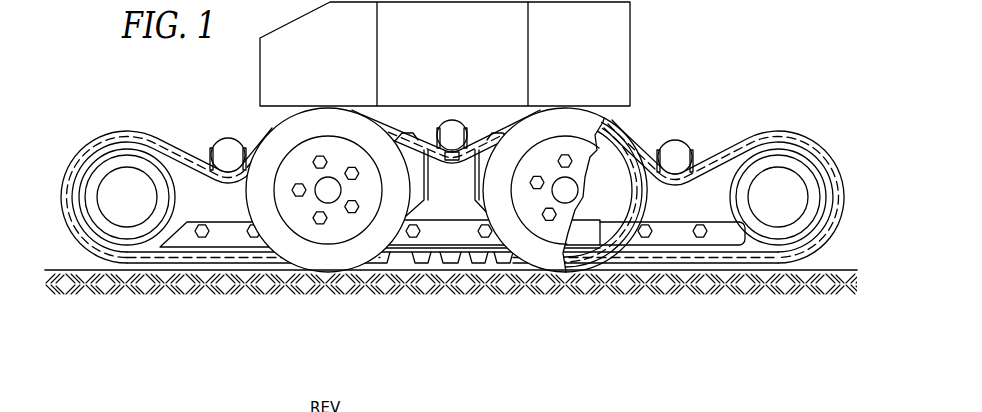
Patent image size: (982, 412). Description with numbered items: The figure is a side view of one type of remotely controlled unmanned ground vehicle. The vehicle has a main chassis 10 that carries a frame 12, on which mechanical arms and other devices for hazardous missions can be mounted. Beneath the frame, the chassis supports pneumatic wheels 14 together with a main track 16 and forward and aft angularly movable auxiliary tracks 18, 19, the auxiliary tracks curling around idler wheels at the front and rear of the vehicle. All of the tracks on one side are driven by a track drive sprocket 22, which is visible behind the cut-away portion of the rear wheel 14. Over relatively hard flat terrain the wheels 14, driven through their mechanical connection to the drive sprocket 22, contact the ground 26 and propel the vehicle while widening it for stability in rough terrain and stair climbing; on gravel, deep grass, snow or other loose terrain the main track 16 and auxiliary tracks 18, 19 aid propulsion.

The main chassis 10 is at (417, 117).
The frame 12 is at (632, 42).
The pneumatic wheels 14 is at (328, 117).
The main track 16 is at (430, 263).
The forward auxiliary track 18 is at (112, 128).
The aft auxiliary track 19 is at (805, 133).
The track drive sprocket 22 is at (582, 217).
The ground 26 is at (440, 268).